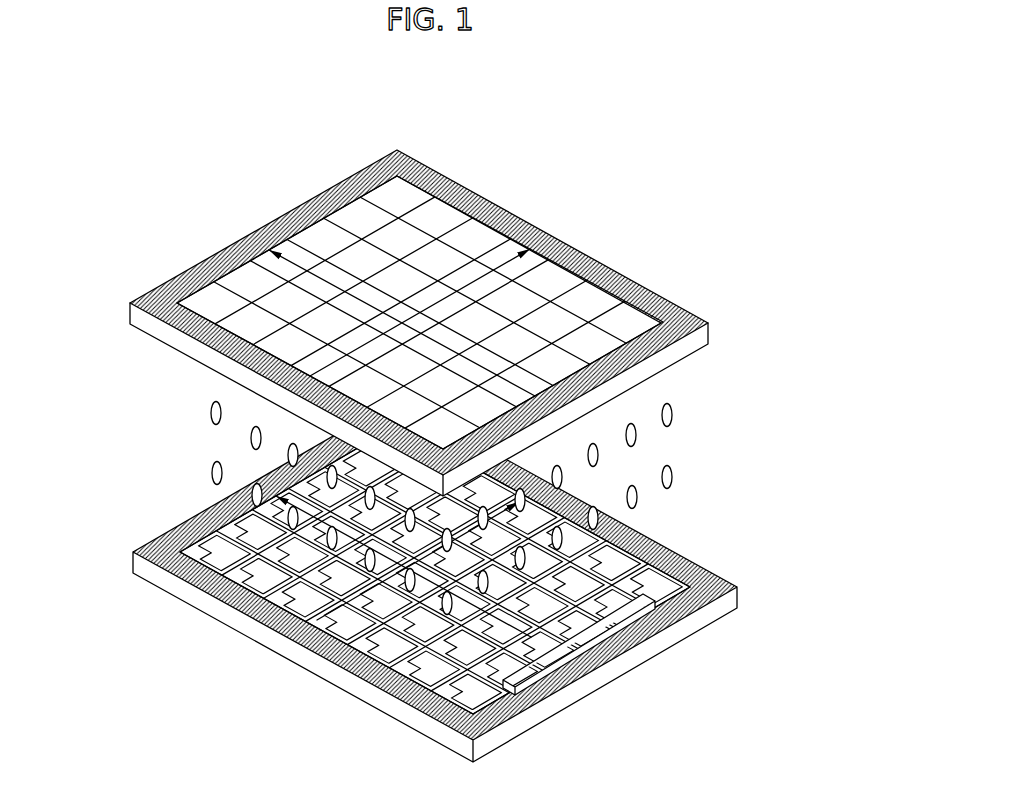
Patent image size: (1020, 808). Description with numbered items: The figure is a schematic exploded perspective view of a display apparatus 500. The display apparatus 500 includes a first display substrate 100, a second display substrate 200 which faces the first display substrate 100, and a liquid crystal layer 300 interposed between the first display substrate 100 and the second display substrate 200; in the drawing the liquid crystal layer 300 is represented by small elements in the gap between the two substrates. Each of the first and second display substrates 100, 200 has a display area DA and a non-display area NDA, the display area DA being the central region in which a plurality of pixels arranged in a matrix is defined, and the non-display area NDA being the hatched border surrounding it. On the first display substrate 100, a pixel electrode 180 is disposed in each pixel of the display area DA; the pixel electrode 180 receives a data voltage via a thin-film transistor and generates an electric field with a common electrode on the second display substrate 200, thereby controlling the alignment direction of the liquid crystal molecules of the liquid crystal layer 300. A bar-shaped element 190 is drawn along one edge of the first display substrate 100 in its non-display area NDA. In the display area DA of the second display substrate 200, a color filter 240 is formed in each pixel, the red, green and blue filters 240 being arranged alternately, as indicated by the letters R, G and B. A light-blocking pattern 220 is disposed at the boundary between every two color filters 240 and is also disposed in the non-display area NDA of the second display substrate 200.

The display apparatus 500 is at (549, 80).
The first display substrate 100 is at (465, 580).
The second display substrate 200 is at (395, 311).
The liquid crystal layer 300 is at (680, 412).
The pixel electrode 180 is at (225, 555).
The pad portion 190 is at (577, 642).
The light-blocking pattern 220 is at (418, 204).
The color filter 240 is at (387, 192).
The display area DA is at (325, 278).
The non-display area NDA is at (190, 325).